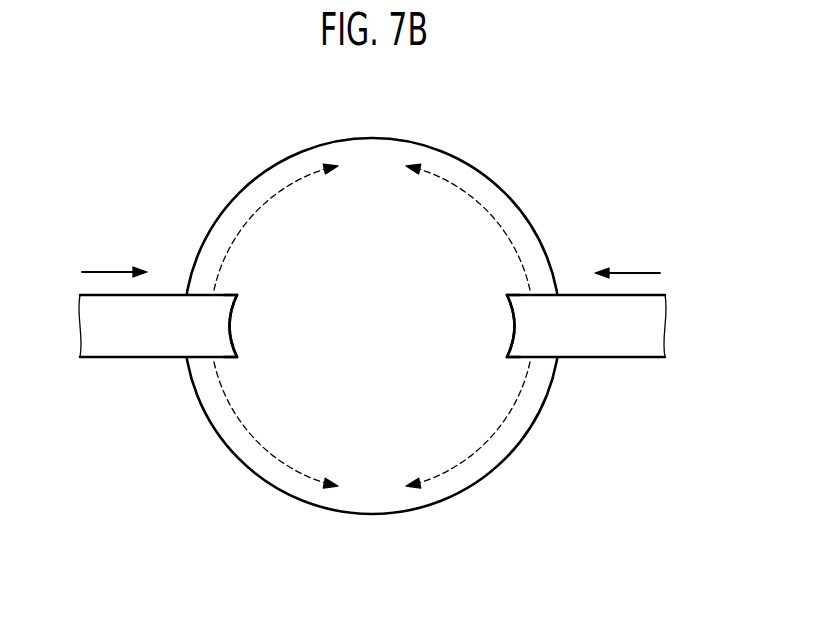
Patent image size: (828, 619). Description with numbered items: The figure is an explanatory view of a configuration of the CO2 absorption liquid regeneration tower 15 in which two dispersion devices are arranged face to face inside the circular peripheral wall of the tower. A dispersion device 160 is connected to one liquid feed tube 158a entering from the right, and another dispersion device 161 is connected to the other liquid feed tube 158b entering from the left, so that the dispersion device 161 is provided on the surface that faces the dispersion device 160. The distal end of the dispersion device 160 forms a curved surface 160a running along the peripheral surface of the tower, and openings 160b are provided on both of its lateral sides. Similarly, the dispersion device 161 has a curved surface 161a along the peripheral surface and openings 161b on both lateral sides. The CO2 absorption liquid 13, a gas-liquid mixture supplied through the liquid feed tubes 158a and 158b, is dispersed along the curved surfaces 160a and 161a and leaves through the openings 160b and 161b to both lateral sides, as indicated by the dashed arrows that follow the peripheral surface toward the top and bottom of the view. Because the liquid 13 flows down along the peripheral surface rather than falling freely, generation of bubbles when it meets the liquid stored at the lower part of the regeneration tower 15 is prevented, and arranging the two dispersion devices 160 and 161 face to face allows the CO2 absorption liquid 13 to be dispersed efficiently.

The CO2 absorption liquid 13 is at (267, 202).
The CO2 absorption liquid regeneration tower 15 is at (447, 153).
The liquid feed tube 158a is at (612, 357).
The liquid feed tube 158b is at (132, 357).
The dispersion device 160 is at (429, 330).
The curved surface 160a is at (516, 326).
The openings 160b is at (519, 294).
The dispersion device 161 is at (312, 323).
The curved surface 161a is at (229, 330).
The openings 161b is at (226, 295).